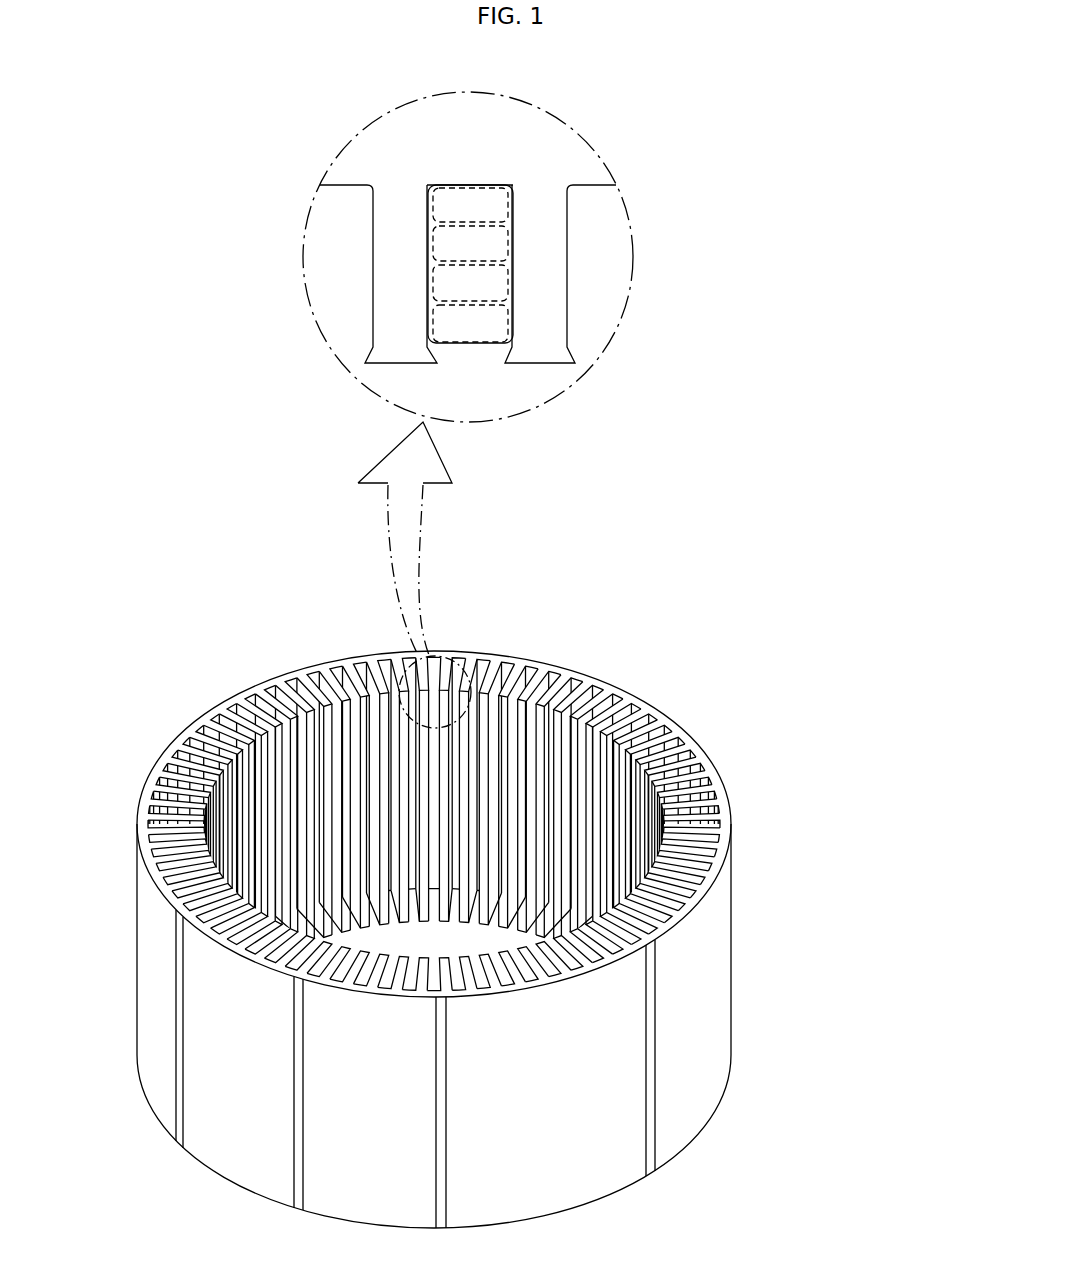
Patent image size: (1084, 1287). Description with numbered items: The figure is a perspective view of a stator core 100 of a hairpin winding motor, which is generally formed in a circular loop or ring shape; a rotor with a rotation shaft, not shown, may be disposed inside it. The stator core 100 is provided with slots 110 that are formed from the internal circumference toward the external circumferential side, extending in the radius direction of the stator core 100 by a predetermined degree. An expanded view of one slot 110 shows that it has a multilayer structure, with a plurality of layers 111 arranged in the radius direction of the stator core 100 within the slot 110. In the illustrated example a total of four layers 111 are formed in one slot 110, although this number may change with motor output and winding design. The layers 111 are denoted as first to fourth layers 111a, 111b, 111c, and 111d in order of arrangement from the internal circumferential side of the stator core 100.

The stator core 100 is at (208, 687).
The slot 110 is at (463, 252).
The layer 111 is at (662, 261).
The first layer 111a is at (513, 332).
The second layer 111b is at (513, 292).
The third layer 111c is at (513, 252).
The fourth layer 111d is at (513, 212).